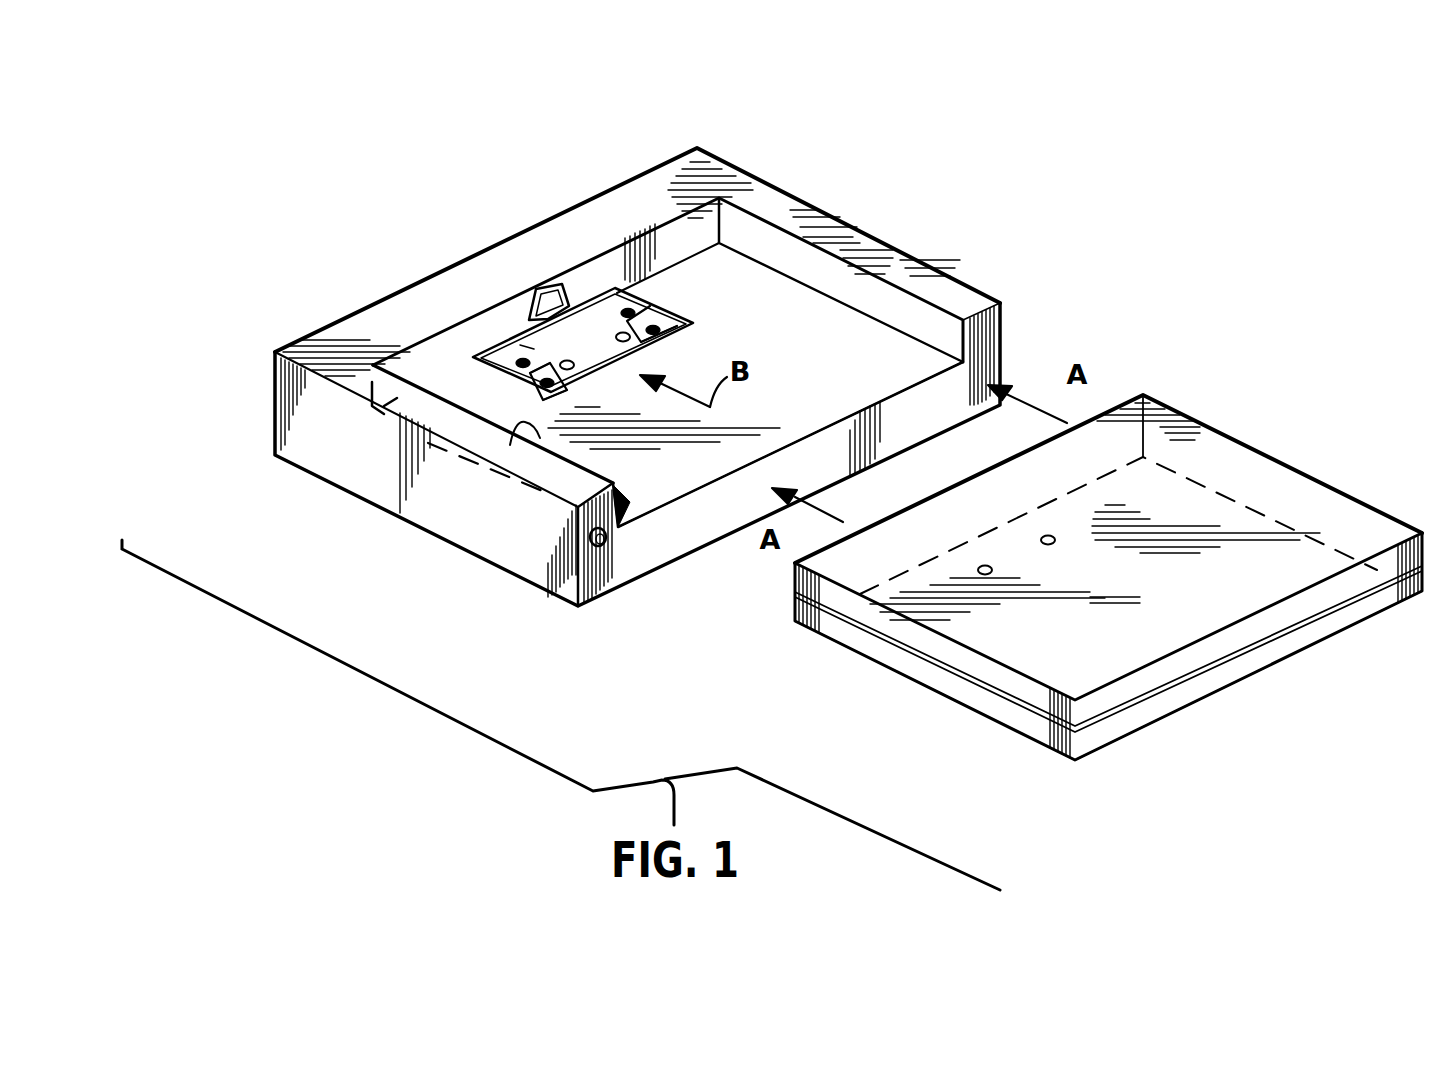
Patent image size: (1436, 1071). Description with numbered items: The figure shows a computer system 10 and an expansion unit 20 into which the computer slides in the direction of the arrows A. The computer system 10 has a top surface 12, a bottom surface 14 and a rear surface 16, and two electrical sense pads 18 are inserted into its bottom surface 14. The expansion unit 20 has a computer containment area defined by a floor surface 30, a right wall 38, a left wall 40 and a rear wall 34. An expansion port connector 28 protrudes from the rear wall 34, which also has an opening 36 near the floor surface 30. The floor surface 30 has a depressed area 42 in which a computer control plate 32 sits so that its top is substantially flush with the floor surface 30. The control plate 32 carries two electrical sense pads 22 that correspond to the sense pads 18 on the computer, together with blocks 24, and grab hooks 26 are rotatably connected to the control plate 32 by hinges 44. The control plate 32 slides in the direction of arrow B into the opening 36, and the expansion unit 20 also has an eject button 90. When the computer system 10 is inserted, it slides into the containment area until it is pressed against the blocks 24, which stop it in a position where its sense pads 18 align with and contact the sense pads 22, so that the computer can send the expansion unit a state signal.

The computer system 10 is at (1318, 480).
The top surface 12 is at (1203, 425).
The bottom surface 14 is at (1030, 728).
The rear surface 16 is at (799, 603).
The electrical sense pads 18 is at (1048, 545).
The expansion unit 20 is at (920, 246).
The electrical sense pads 22 is at (622, 342).
The blocks 24 is at (522, 358).
The grab hooks 26 is at (657, 328).
The expansion port connector 28 is at (548, 282).
The floor surface 30 is at (662, 478).
The computer control plate 32 is at (527, 347).
The rear wall 34 is at (630, 255).
The opening 36 is at (530, 372).
The right wall 38 is at (948, 333).
The left wall 40 is at (555, 397).
The depressed area 42 is at (679, 334).
The hinges 44 is at (636, 316).
The eject button 90 is at (602, 548).